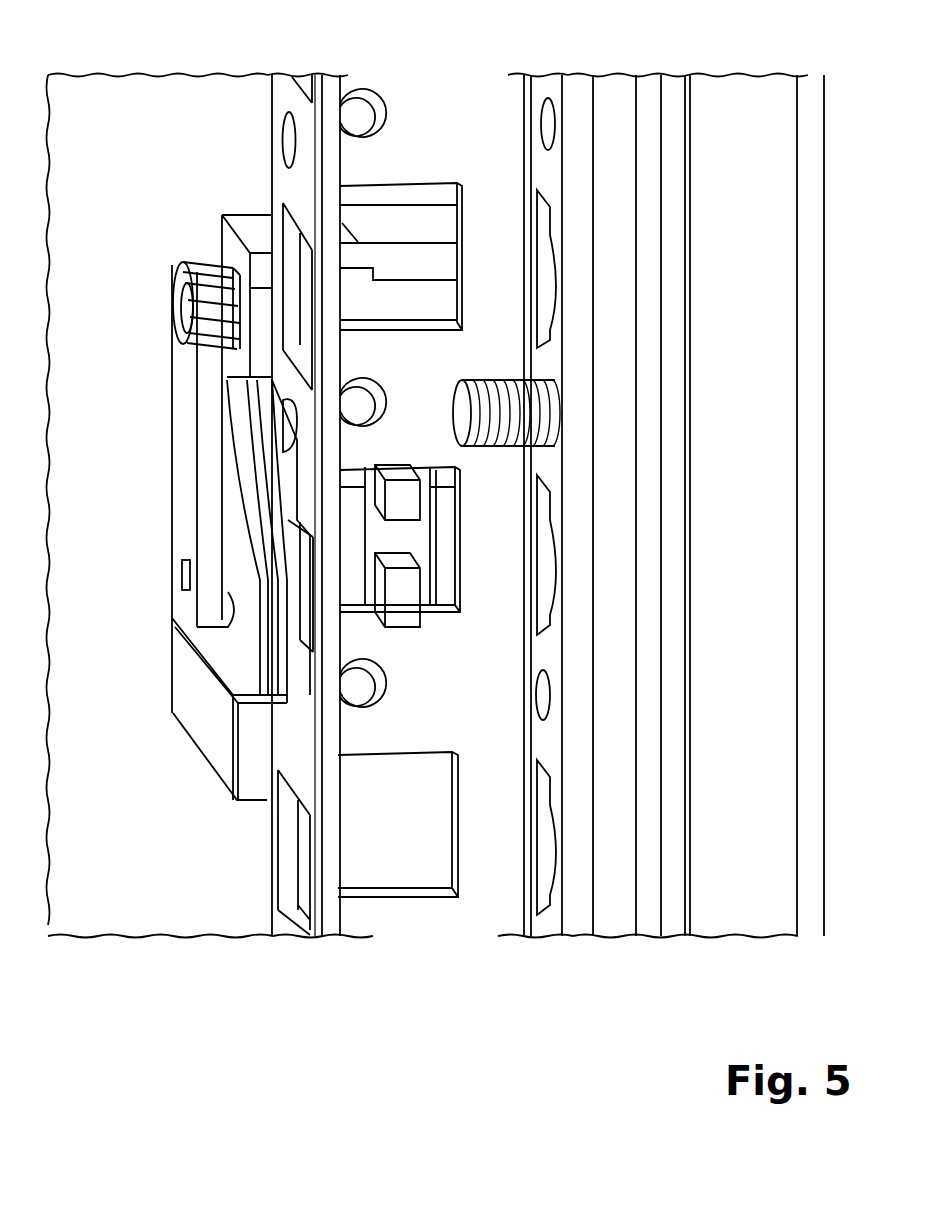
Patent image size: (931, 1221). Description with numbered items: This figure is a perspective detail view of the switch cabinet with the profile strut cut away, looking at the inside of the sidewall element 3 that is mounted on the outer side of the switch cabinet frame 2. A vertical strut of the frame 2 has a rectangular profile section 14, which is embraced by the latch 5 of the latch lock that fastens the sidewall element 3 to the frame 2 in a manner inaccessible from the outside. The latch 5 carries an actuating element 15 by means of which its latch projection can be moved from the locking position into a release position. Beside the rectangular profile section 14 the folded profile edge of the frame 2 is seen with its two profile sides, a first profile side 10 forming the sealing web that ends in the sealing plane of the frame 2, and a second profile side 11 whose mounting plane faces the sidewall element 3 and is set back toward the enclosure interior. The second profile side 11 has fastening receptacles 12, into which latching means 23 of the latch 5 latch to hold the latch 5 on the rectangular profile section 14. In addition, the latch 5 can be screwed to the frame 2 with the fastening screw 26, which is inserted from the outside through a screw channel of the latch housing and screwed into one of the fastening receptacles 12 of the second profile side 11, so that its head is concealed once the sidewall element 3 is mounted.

The switch cabinet frame 2 is at (752, 110).
The sidewall element 3 is at (146, 107).
The latch 5 is at (190, 765).
The first profile side 10 is at (808, 915).
The second profile side 11 is at (545, 100).
The fastening receptacles 12 is at (437, 193).
The rectangular profile section 14 is at (408, 95).
The actuating element 15 is at (197, 265).
The latching means 23 is at (408, 478).
The fastening screw 26 is at (510, 375).